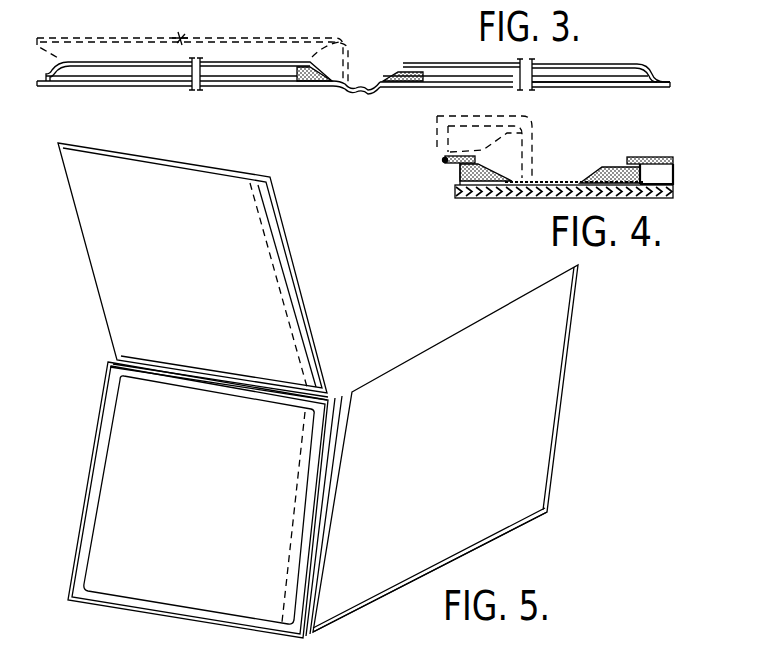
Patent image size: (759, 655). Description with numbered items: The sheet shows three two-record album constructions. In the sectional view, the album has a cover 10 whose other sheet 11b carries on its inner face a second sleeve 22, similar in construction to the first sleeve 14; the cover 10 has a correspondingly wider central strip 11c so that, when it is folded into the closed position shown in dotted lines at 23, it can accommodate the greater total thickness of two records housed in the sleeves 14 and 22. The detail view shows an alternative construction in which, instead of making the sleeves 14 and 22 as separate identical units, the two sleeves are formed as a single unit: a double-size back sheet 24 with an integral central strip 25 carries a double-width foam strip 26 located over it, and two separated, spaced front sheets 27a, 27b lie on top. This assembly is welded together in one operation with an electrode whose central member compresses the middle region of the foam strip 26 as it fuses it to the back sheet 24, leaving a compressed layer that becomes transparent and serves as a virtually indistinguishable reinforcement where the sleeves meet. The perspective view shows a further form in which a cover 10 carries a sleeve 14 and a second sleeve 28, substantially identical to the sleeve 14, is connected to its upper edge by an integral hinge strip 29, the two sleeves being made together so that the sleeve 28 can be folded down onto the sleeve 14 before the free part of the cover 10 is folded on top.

In FIG. 3, the cover 10 is at (294, 91).
In FIG. 5, the cover 10 is at (507, 548).
In FIG. 3, the other sheet of the cover 11b is at (628, 92).
In FIG. 5, the other sheet of the cover 11b is at (425, 360).
In FIG. 3, the central strip of the cover 11c is at (353, 94).
In FIG. 3, the sleeve 14 is at (108, 72).
In FIG. 5, the sleeve 14 is at (113, 479).
In FIG. 3, the second sleeve 22 is at (605, 70).
In FIG. 3, the closed position of the cover 23 is at (180, 38).
In FIG. 4, the back sheet 24 is at (475, 196).
In FIG. 4, the central strip of the back sheet 25 is at (552, 180).
In FIG. 4, the foam strip 26 is at (603, 174).
In FIG. 4, the front sheet 27a is at (443, 166).
In FIG. 4, the front sheet 27b is at (643, 157).
In FIG. 5, the second sleeve 28 is at (273, 310).
In FIG. 5, the hinge strip 29 is at (257, 386).